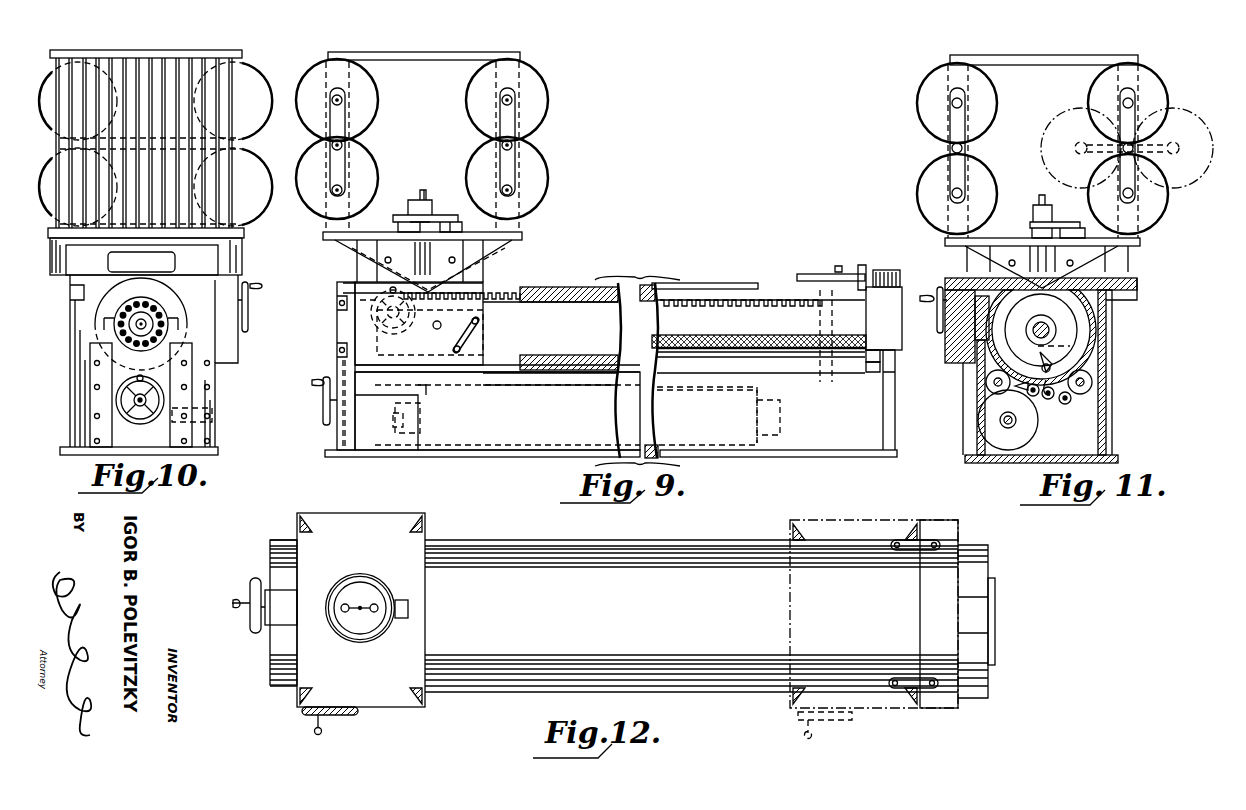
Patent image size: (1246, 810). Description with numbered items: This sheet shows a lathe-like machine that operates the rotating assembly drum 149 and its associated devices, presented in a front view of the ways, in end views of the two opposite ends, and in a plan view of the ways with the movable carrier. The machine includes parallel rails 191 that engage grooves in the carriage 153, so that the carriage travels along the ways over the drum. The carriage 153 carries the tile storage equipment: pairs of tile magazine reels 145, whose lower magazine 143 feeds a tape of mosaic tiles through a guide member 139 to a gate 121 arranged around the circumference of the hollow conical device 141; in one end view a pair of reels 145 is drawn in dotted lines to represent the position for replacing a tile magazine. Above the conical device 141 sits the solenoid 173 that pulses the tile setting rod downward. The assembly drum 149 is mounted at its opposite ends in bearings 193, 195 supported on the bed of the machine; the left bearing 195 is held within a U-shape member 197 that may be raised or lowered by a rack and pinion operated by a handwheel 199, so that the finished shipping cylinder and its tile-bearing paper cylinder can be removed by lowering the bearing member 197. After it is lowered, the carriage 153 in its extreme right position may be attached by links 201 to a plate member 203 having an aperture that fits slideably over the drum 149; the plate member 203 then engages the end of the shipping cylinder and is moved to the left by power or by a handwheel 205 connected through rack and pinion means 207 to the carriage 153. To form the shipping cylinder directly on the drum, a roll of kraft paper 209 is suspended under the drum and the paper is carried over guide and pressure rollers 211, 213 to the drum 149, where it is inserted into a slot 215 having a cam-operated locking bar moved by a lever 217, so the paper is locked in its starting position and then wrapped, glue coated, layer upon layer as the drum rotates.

In FIG. 11, the gate 121 is at (1012, 268).
In FIG. 9, the guide member 139 is at (353, 240).
In FIG. 11, the guide member 139 is at (990, 250).
In FIG. 10, the hollow conical device 141 is at (108, 262).
In FIG. 9, the hollow conical device 141 is at (405, 252).
In FIG. 9, the lower magazine 143 is at (313, 163).
In FIG. 9, the tile magazine reel 145 is at (300, 78).
In FIG. 11, the tile magazine reel 145 is at (1205, 110).
In FIG. 9, the assembly drum 149 is at (867, 363).
In FIG. 11, the assembly drum 149 is at (1060, 322).
In FIG. 10, the carriage 153 is at (232, 358).
In FIG. 9, the carriage 153 is at (483, 283).
In FIG. 11, the carriage 153 is at (1113, 272).
In FIG. 12, the carriage 153 is at (362, 528).
In FIG. 9, the solenoid 173 is at (430, 210).
In FIG. 9, the parallel rails 191 is at (759, 336).
In FIG. 11, the parallel rails 191 is at (950, 278).
In FIG. 12, the parallel rails 191 is at (573, 555).
In FIG. 9, the bearing 193 is at (884, 352).
In FIG. 12, the bearing 193 is at (998, 593).
In FIG. 10, the bearing 195 is at (160, 305).
In FIG. 10, the U-shape member 197 is at (172, 332).
In FIG. 9, the U-shape member 197 is at (343, 435).
In FIG. 10, the handwheel 199 is at (125, 418).
In FIG. 9, the handwheel 199 is at (322, 421).
In FIG. 12, the handwheel 199 is at (245, 598).
In FIG. 9, the link 201 is at (815, 274).
In FIG. 12, the link 201 is at (910, 540).
In FIG. 9, the plate member 203 is at (850, 273).
In FIG. 12, the plate member 203 is at (947, 533).
In FIG. 10, the handwheel 205 is at (248, 306).
In FIG. 9, the handwheel 205 is at (380, 292).
In FIG. 11, the handwheel 205 is at (945, 290).
In FIG. 12, the handwheel 205 is at (330, 713).
In FIG. 9, the rack and pinion means 207 is at (520, 292).
In FIG. 9, the roll of kraft paper 209 is at (728, 437).
In FIG. 11, the roll of kraft paper 209 is at (1002, 425).
In FIG. 11, the guide roller 211 is at (1048, 390).
In FIG. 11, the pressure roller 213 is at (1083, 383).
In FIG. 11, the slot 215 is at (1062, 342).
In FIG. 11, the lever 217 is at (1052, 358).